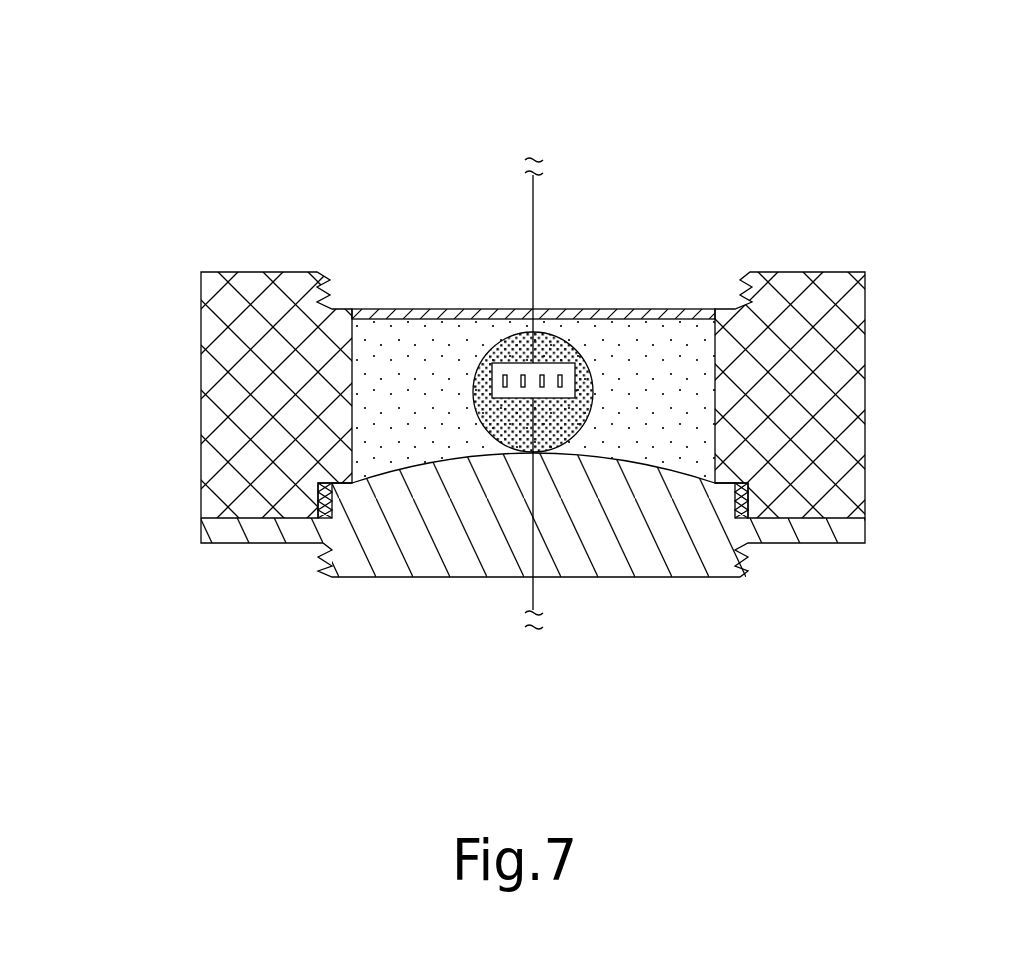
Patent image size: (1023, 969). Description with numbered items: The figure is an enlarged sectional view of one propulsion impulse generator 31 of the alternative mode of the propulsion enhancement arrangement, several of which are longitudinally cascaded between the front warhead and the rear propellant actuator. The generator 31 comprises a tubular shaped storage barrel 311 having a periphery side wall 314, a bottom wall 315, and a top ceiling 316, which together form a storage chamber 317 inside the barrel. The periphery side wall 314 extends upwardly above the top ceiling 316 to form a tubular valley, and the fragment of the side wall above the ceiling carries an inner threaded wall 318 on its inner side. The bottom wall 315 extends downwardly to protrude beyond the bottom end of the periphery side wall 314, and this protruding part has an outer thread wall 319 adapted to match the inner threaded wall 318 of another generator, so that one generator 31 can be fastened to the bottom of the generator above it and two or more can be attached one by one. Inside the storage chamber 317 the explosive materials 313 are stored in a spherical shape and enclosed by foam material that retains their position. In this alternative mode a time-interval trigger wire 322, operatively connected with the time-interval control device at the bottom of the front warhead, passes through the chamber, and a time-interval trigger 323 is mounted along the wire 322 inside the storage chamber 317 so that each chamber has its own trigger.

The propulsion impulse generator 31 is at (472, 105).
The storage barrel 311 is at (895, 402).
The explosive materials 313 is at (498, 350).
The periphery side wall 314 is at (220, 322).
The bottom wall 315 is at (572, 545).
The top ceiling 316 is at (673, 313).
The storage chamber 317 is at (388, 422).
The inner threaded wall 318 is at (322, 275).
The outer thread wall 319 is at (327, 552).
The time-interval trigger wire 322 is at (533, 590).
The time-interval trigger 323 is at (567, 380).